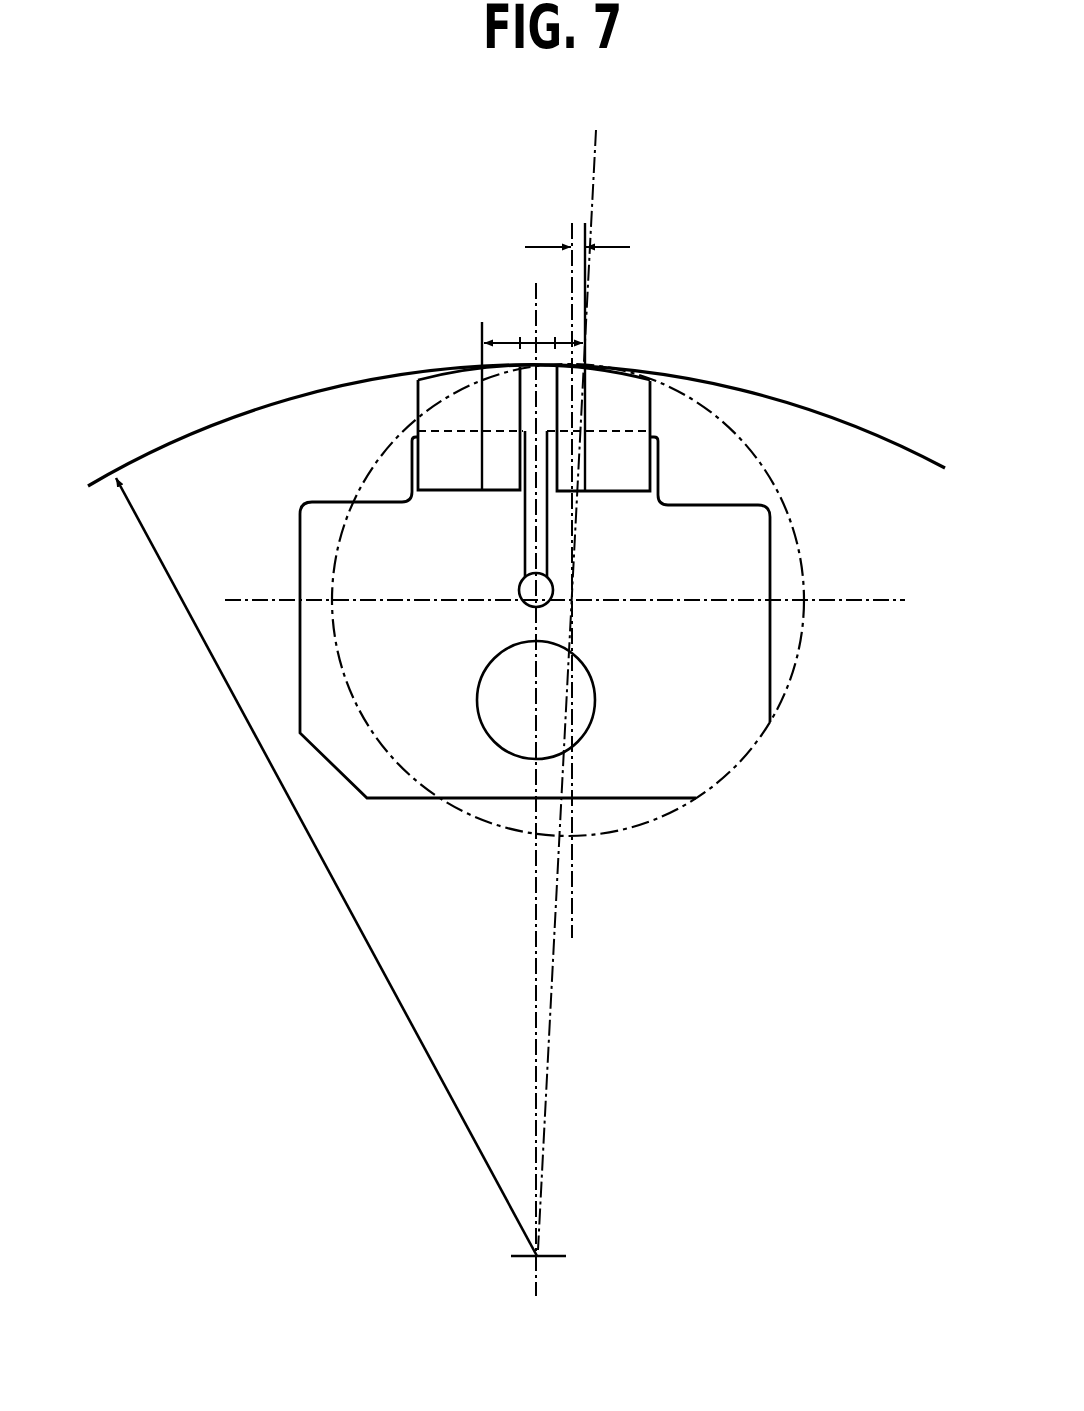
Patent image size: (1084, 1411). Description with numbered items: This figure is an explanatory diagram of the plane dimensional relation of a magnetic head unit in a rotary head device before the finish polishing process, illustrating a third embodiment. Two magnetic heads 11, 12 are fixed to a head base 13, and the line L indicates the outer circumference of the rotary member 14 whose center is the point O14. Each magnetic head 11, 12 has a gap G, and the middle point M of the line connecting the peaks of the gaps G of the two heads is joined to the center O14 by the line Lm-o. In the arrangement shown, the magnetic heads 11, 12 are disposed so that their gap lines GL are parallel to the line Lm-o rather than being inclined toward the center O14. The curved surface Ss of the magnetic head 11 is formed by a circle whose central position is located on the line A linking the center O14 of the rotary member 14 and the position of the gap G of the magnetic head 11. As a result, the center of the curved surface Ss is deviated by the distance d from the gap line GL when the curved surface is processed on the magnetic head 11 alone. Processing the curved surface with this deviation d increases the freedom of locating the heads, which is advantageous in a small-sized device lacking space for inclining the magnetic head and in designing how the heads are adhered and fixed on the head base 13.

The magnetic head 11 is at (615, 415).
The magnetic head 12 is at (448, 410).
The head base 13 is at (712, 720).
The rotary member 14 is at (652, 986).
The line indicating the outer circumference of the rotary member L is at (193, 435).
The line linking the center of the rotary member and the gap position A is at (603, 158).
The distance d is at (577, 213).
The middle point M is at (540, 342).
The gap G is at (480, 365).
The gap line GL is at (483, 450).
The curved surface Ss is at (438, 372).
The line linking the middle point M and the center O14 Lm-o is at (537, 895).
The center of the rotary member O14 is at (573, 1286).